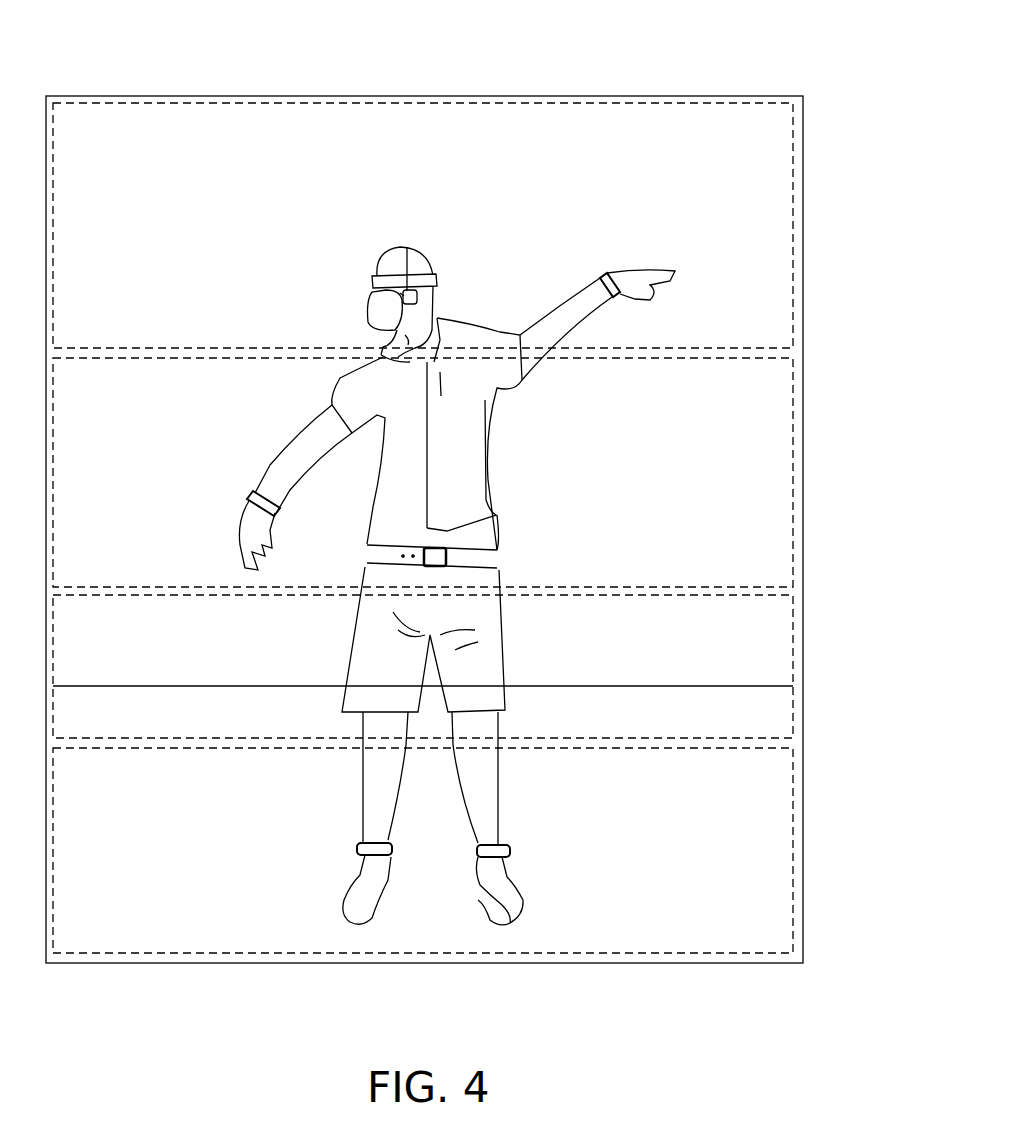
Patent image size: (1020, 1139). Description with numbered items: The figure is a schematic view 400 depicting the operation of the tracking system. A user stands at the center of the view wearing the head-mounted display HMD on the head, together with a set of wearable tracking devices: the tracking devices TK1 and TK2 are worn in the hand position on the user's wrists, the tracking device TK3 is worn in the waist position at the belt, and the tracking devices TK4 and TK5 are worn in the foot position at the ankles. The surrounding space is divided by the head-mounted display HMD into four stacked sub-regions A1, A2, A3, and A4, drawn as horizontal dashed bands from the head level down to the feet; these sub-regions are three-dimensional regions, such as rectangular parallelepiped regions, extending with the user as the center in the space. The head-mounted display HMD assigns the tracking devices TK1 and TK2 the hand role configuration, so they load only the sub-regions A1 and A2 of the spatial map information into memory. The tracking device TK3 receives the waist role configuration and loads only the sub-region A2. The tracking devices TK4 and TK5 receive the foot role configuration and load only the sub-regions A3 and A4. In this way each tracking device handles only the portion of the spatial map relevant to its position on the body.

The schematic view 400 is at (414, 72).
The head-mounted display HMD is at (367, 268).
The tracking device TK1 is at (614, 228).
The tracking device TK2 is at (243, 482).
The tracking device TK3 is at (449, 553).
The tracking device TK4 is at (541, 862).
The tracking device TK5 is at (313, 862).
The sub-region A1 is at (814, 237).
The sub-region A2 is at (814, 476).
The sub-region A3 is at (814, 657).
The sub-region A4 is at (814, 849).